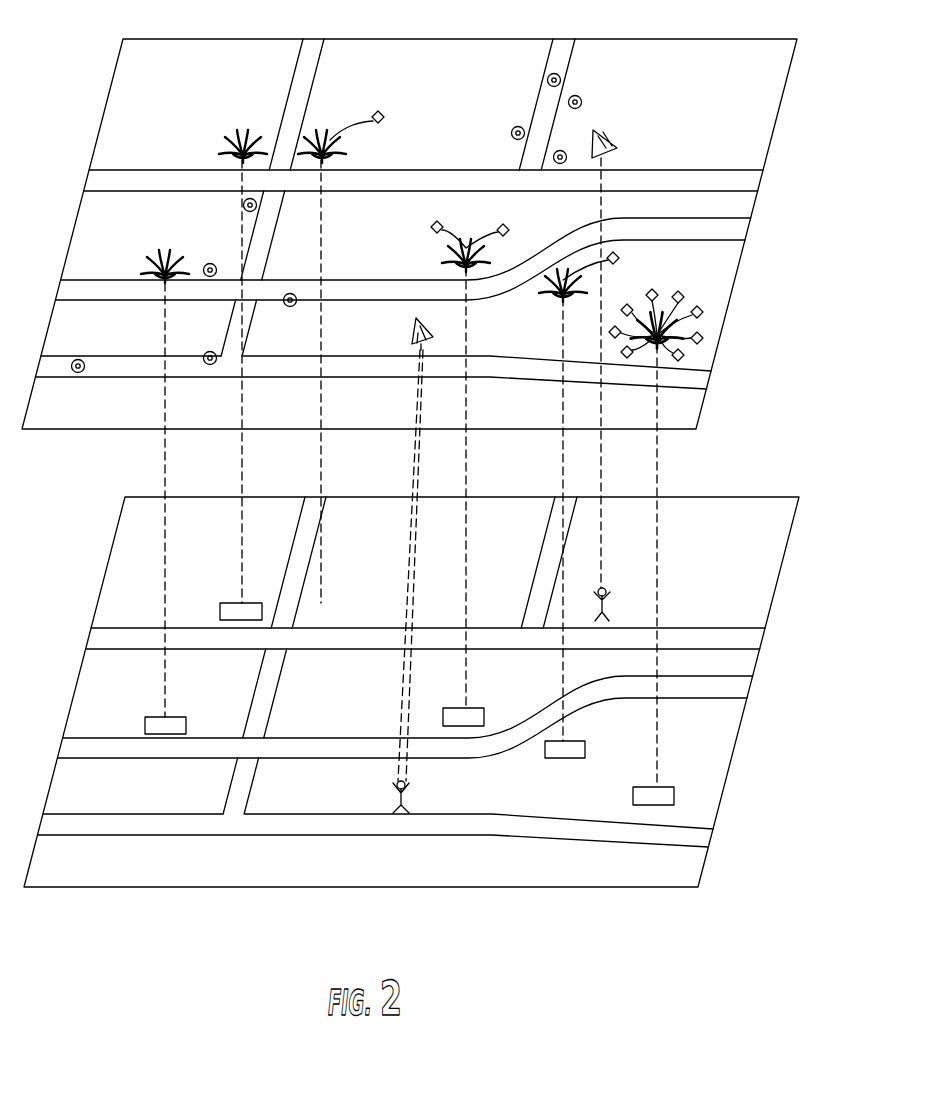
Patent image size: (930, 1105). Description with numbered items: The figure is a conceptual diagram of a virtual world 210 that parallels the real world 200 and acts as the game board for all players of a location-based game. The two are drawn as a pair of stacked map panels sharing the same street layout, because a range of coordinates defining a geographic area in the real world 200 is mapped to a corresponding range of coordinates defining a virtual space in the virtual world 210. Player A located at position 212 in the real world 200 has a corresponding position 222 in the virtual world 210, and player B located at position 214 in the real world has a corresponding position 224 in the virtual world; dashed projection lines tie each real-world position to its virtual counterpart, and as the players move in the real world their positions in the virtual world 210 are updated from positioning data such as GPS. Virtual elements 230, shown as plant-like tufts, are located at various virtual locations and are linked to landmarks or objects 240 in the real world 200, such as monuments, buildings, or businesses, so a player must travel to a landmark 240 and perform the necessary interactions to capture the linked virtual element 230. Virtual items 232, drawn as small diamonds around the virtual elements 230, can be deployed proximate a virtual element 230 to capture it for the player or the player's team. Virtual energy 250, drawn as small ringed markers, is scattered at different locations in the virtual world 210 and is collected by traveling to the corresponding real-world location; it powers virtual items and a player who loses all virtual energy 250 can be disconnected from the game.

The real world 200 is at (768, 603).
The virtual world 210 is at (770, 150).
The position of player A in the real world 212 is at (393, 786).
The position of player B in the real world 214 is at (608, 590).
The position of player A in the virtual world 222 is at (437, 335).
The position of player B in the virtual world 224 is at (618, 148).
The virtual element 230 is at (240, 132).
The virtual item 232 is at (385, 112).
The real world landmark or object 240 is at (237, 603).
The virtual energy 250 is at (583, 102).